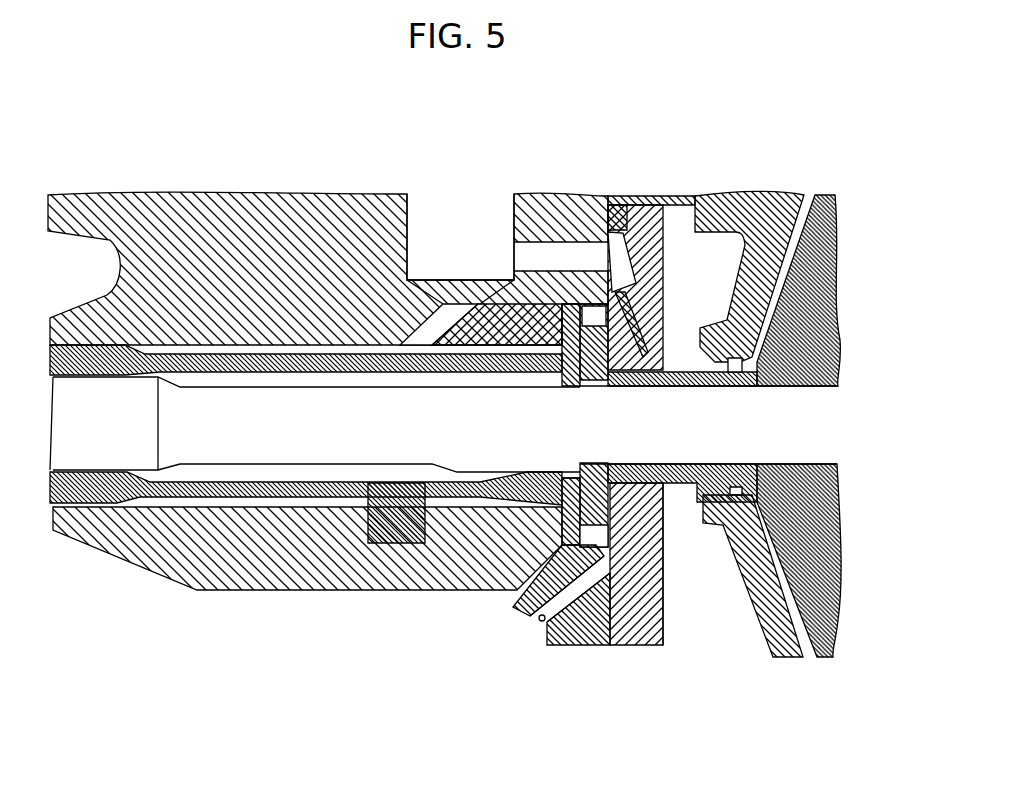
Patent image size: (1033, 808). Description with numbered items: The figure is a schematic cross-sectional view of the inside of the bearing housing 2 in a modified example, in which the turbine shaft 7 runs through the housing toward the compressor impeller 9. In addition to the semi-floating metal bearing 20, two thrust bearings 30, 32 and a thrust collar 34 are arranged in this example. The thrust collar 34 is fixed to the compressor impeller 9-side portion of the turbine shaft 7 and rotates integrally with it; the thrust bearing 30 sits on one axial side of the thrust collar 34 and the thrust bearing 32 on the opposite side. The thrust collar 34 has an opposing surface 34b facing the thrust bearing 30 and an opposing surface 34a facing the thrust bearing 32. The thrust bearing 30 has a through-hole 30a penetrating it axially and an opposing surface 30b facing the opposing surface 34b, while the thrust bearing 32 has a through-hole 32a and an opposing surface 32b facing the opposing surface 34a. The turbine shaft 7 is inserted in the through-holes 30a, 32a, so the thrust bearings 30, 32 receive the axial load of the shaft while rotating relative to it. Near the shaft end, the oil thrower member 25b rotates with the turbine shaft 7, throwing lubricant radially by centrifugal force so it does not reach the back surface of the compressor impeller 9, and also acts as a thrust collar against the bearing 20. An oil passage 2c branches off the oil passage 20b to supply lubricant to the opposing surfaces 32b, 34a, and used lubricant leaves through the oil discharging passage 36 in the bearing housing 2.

The bearing housing 2 is at (150, 195).
The oil passage 2c is at (456, 200).
The turbine shaft 7 is at (243, 387).
The compressor impeller 9 is at (835, 200).
The bearing 20 is at (280, 497).
The oil passage 20b is at (402, 360).
The oil thrower member 25b is at (682, 487).
The thrust bearing 30 is at (570, 548).
The through-hole 30a is at (562, 478).
The opposing surface 30b is at (575, 304).
The thrust bearing 32 is at (637, 645).
The through-hole 32a is at (678, 373).
The opposing surface 32b is at (632, 218).
The thrust collar 34 is at (597, 326).
The opposing surface 34a is at (663, 523).
The opposing surface 34b is at (545, 562).
The oil discharging passage 36 is at (542, 621).